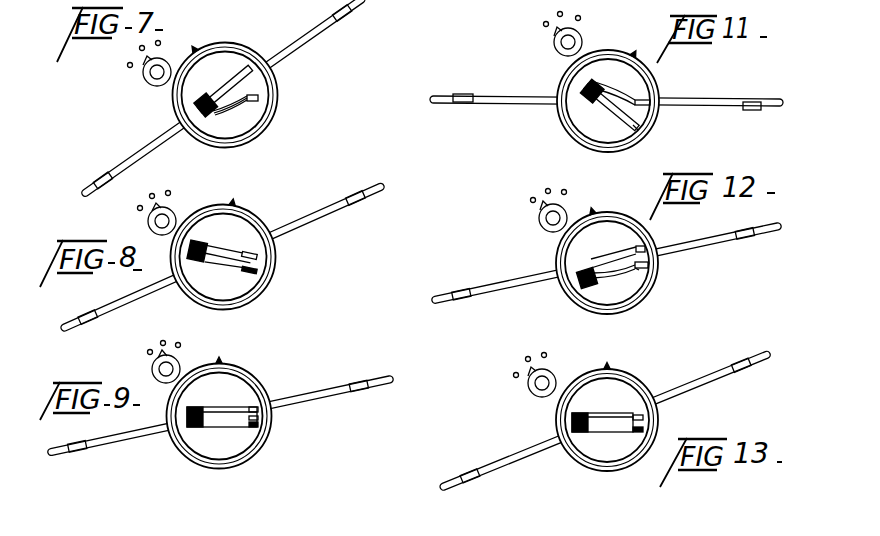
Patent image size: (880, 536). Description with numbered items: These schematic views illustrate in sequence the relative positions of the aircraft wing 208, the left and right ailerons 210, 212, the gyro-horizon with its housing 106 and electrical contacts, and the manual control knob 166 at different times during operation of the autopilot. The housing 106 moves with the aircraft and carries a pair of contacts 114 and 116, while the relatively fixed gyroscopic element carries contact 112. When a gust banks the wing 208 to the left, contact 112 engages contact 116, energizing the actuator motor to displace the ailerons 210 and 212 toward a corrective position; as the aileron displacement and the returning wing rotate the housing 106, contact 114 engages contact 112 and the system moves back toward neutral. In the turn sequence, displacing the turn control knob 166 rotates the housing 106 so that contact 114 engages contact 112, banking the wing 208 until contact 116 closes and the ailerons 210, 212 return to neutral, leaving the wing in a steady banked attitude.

In FIG. 7, the housing 106 is at (226, 146).
In FIG. 8, the housing 106 is at (250, 300).
In FIG. 9, the housing 106 is at (205, 470).
In FIG. 11, the housing 106 is at (575, 140).
In FIG. 12, the housing 106 is at (567, 295).
In FIG. 13, the housing 106 is at (575, 470).
In FIG. 7, the electrical contact 112 is at (256, 96).
In FIG. 8, the electrical contact 112 is at (254, 256).
In FIG. 9, the electrical contact 112 is at (260, 417).
In FIG. 11, the electrical contact 112 is at (648, 110).
In FIG. 12, the electrical contact 112 is at (648, 265).
In FIG. 13, the electrical contact 112 is at (644, 424).
In FIG. 7, the electrical contact 114 is at (247, 70).
In FIG. 8, the electrical contact 114 is at (252, 250).
In FIG. 9, the electrical contact 114 is at (247, 407).
In FIG. 11, the electrical contact 114 is at (650, 98).
In FIG. 12, the electrical contact 114 is at (634, 246).
In FIG. 13, the electrical contact 114 is at (640, 416).
In FIG. 7, the electrical contact 116 is at (258, 104).
In FIG. 8, the electrical contact 116 is at (250, 269).
In FIG. 9, the electrical contact 116 is at (252, 426).
In FIG. 11, the electrical contact 116 is at (637, 130).
In FIG. 12, the electrical contact 116 is at (648, 270).
In FIG. 13, the electrical contact 116 is at (642, 432).
In FIG. 7, the manual control knob 166 is at (157, 72).
In FIG. 8, the manual control knob 166 is at (162, 221).
In FIG. 9, the manual control knob 166 is at (166, 369).
In FIG. 11, the manual control knob 166 is at (558, 41).
In FIG. 12, the manual control knob 166 is at (553, 218).
In FIG. 13, the manual control knob 166 is at (542, 383).
In FIG. 7, the aircraft wing 208 is at (313, 35).
In FIG. 8, the aircraft wing 208 is at (137, 296).
In FIG. 9, the aircraft wing 208 is at (130, 440).
In FIG. 11, the aircraft wing 208 is at (512, 100).
In FIG. 12, the aircraft wing 208 is at (500, 292).
In FIG. 13, the aircraft wing 208 is at (685, 390).
In FIG. 7, the left aileron 210 is at (106, 178).
In FIG. 8, the left aileron 210 is at (97, 323).
In FIG. 9, the left aileron 210 is at (77, 455).
In FIG. 11, the left aileron 210 is at (465, 92).
In FIG. 12, the left aileron 210 is at (458, 295).
In FIG. 13, the left aileron 210 is at (470, 478).
In FIG. 7, the right aileron 212 is at (345, 15).
In FIG. 8, the right aileron 212 is at (353, 186).
In FIG. 9, the right aileron 212 is at (358, 382).
In FIG. 11, the right aileron 212 is at (753, 110).
In FIG. 12, the right aileron 212 is at (745, 237).
In FIG. 13, the right aileron 212 is at (750, 363).